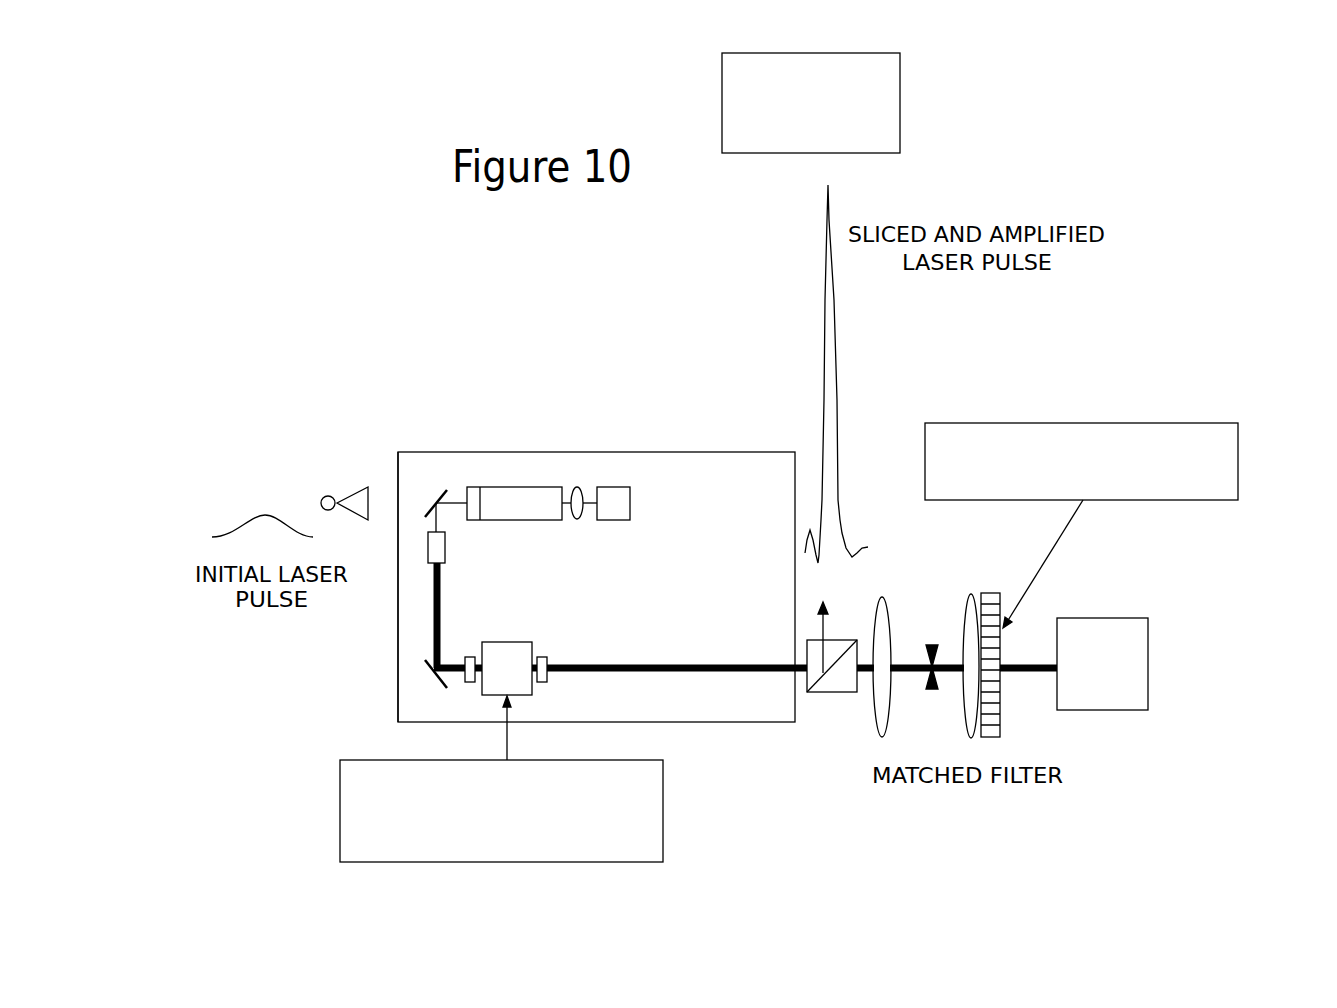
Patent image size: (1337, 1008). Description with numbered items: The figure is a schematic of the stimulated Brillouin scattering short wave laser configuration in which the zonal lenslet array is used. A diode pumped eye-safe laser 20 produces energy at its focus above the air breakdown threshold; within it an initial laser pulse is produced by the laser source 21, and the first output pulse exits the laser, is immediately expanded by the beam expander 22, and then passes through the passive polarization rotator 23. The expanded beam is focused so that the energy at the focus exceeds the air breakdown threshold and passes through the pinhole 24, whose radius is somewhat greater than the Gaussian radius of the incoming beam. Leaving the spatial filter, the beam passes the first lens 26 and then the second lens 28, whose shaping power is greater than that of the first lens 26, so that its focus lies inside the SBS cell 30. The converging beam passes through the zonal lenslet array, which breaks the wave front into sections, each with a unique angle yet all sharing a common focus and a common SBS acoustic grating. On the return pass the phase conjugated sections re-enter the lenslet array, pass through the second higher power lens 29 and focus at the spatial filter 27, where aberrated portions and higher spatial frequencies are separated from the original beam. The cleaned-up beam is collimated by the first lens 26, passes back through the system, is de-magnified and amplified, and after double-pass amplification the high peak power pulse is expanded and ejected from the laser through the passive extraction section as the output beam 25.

The diode pumped eye-safe laser 20 is at (596, 547).
The laser source 21 is at (347, 492).
The beam expander 22 is at (415, 612).
The passive polarization rotator 23 is at (540, 697).
The pinhole 24 is at (803, 677).
The output beam 25 is at (830, 640).
The first lens 26 is at (872, 712).
The spatial filter 27 is at (931, 645).
The second lens 28 is at (962, 622).
The second higher power lens 29 is at (1003, 717).
The SBS cell 30 is at (1148, 633).